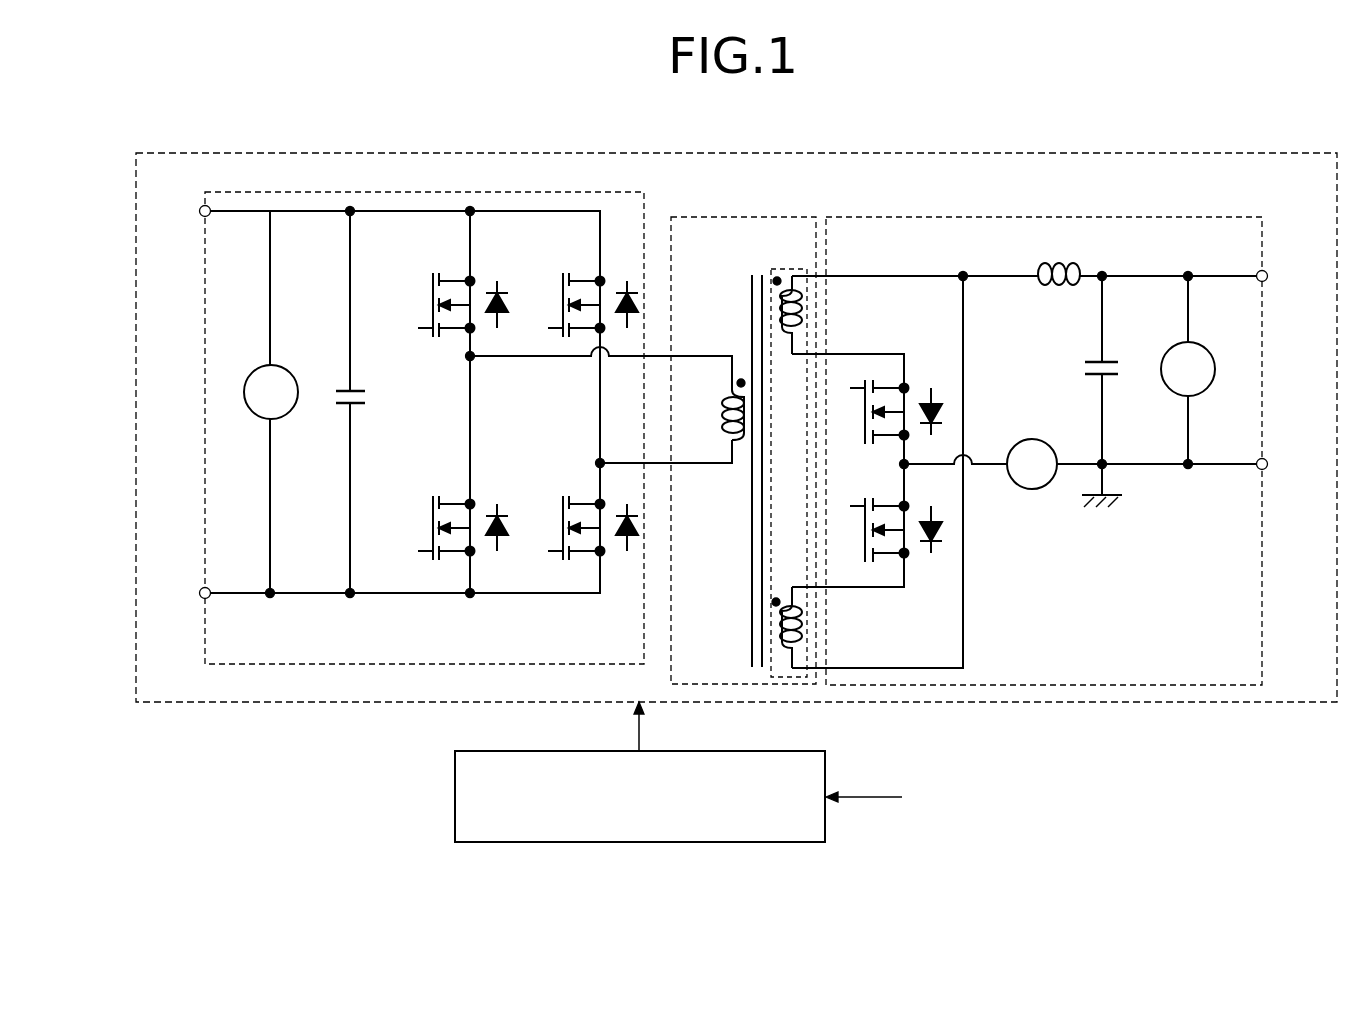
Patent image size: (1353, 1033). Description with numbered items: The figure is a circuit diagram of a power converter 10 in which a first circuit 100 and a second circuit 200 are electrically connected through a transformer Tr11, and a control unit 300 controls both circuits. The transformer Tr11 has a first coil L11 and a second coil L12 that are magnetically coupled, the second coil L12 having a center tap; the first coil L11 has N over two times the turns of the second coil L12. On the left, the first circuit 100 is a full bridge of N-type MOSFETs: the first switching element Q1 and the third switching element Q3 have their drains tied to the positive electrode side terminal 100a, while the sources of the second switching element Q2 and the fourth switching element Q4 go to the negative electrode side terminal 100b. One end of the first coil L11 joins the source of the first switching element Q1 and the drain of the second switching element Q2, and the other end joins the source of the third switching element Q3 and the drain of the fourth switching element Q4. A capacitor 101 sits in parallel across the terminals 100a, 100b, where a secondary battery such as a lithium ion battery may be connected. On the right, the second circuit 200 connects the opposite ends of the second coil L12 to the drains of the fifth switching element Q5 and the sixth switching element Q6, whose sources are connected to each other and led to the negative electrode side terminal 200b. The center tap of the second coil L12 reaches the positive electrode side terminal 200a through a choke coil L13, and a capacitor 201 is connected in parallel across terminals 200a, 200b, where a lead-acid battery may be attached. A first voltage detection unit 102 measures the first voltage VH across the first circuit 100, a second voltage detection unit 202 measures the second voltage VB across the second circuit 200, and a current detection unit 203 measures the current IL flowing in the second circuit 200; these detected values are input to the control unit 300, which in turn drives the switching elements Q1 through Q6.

The power converter 10 is at (672, 152).
The first circuit 100 is at (596, 186).
The positive electrode side terminal 100a is at (201, 207).
The negative electrode side terminal 100b is at (201, 598).
The capacitor 101 is at (360, 389).
The first voltage detection unit 102 is at (254, 373).
The first switching element Q1 is at (433, 290).
The second switching element Q2 is at (433, 514).
The third switching element Q3 is at (563, 290).
The fourth switching element Q4 is at (563, 514).
The fifth switching element Q5 is at (865, 406).
The sixth switching element Q6 is at (866, 533).
The transformer Tr11 is at (746, 215).
The first coil L11 is at (721, 412).
The second coil L12 is at (790, 269).
The choke coil L13 is at (1058, 290).
The second circuit 200 is at (972, 216).
The positive electrode side terminal 200a is at (1266, 270).
The negative electrode side terminal 200b is at (1266, 470).
The capacitor 201 is at (1104, 365).
The second voltage detection unit 202 is at (1198, 353).
The current detection unit 203 is at (1051, 447).
The control unit 300 is at (725, 843).